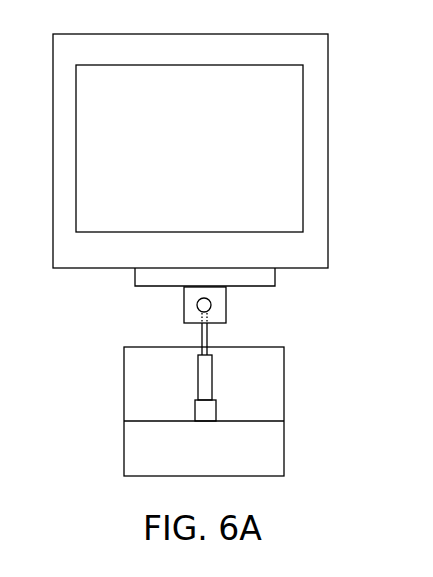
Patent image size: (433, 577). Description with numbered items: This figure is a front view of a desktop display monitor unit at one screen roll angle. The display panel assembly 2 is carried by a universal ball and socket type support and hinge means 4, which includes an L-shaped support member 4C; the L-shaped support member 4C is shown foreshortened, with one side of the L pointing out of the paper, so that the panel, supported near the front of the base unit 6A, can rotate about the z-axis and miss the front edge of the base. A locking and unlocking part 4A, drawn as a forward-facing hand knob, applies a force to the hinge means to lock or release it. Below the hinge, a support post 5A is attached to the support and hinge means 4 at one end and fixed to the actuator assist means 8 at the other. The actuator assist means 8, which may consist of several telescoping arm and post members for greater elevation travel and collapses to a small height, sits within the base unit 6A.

The display panel assembly 2 is at (320, 75).
The support and hinge means 4 is at (184, 308).
The locking and unlocking part 4A is at (211, 303).
The L-shaped support member 4C is at (267, 277).
The support post 5A is at (207, 338).
The actuator assist means 8 is at (205, 393).
The base unit 6A is at (273, 453).